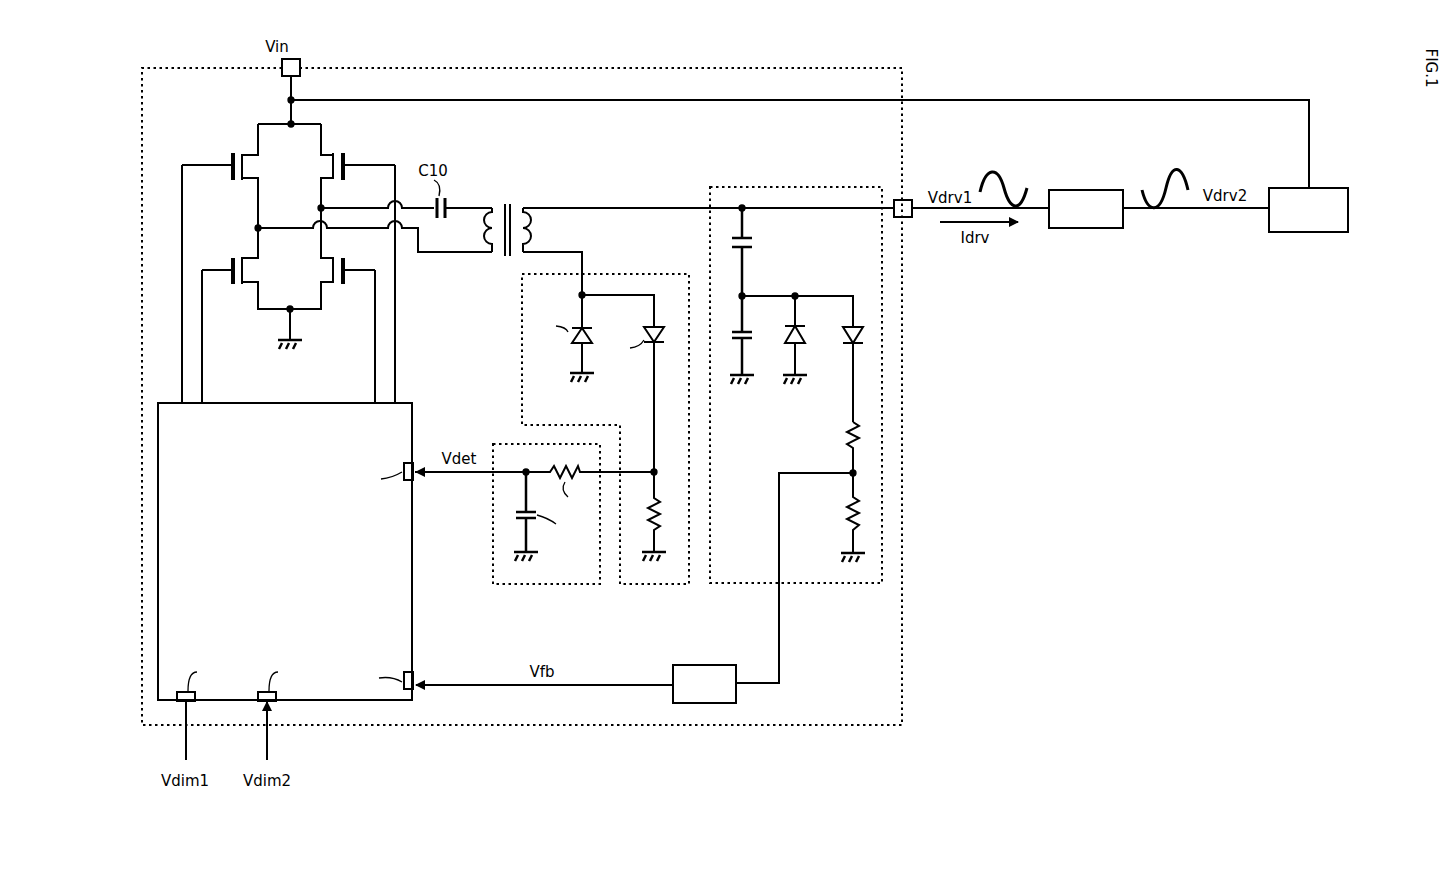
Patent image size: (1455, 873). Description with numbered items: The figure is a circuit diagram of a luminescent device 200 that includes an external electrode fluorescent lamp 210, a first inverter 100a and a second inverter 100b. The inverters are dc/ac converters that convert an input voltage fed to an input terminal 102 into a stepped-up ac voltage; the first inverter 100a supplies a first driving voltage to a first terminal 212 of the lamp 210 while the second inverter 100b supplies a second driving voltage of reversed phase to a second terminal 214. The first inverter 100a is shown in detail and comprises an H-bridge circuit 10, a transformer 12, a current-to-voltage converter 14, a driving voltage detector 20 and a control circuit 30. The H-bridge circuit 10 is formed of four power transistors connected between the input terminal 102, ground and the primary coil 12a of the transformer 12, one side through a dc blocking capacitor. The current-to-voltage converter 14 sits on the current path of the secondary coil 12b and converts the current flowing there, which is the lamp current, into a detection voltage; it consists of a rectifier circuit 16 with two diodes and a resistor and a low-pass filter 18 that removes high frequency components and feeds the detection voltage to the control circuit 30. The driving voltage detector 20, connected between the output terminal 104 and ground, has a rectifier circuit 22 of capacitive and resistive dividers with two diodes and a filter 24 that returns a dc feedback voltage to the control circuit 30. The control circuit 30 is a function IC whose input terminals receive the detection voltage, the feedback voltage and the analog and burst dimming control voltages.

The luminescent device 200 is at (750, 810).
The first inverter 100a is at (515, 726).
The second inverter 100b is at (1310, 233).
The input terminal 102 is at (300, 62).
The output terminal 104 is at (904, 199).
The H-bridge circuit 10 is at (357, 348).
The transformer 12 is at (510, 194).
The primary coil 12a is at (490, 207).
The secondary coil 12b is at (537, 211).
The current-to-voltage converter 14 is at (523, 626).
The rectifier circuit 16 is at (654, 585).
The filter 18 is at (545, 585).
The driving voltage detector 20 is at (836, 592).
The rectifier circuit 22 is at (803, 584).
The filter 24 is at (736, 700).
The control circuit 30 is at (412, 404).
The EEFL 210 is at (1087, 229).
The first terminal 212 is at (1047, 204).
The second terminal 214 is at (1124, 212).